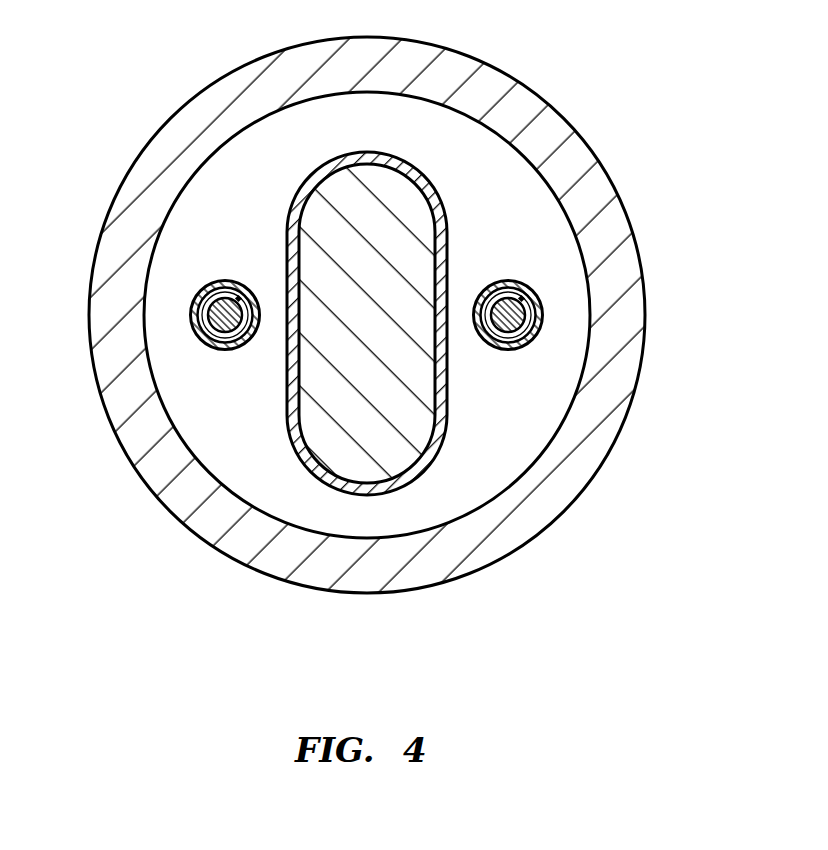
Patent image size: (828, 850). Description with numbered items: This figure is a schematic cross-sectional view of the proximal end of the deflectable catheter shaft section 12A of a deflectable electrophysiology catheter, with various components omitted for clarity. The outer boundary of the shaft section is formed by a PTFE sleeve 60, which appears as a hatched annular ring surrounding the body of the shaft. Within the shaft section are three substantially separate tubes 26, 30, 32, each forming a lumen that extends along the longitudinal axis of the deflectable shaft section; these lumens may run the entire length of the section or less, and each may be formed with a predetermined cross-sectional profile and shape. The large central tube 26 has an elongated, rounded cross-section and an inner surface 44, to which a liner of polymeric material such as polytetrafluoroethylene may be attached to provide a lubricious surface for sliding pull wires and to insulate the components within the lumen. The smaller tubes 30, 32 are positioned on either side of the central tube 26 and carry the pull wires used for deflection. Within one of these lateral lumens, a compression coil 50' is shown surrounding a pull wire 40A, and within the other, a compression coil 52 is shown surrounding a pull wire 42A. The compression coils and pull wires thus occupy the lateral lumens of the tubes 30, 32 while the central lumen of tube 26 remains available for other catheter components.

The deflectable catheter shaft section 12A is at (103, 115).
The PTFE sleeve 60 is at (570, 160).
The tube 26 is at (399, 482).
The inner surface 44 is at (412, 462).
The compression coil 50' is at (153, 278).
The tube 30 is at (208, 302).
The pull wire 40A is at (220, 316).
The tube 32 is at (527, 340).
The compression coil 52 is at (528, 304).
The pull wire 42A is at (518, 316).